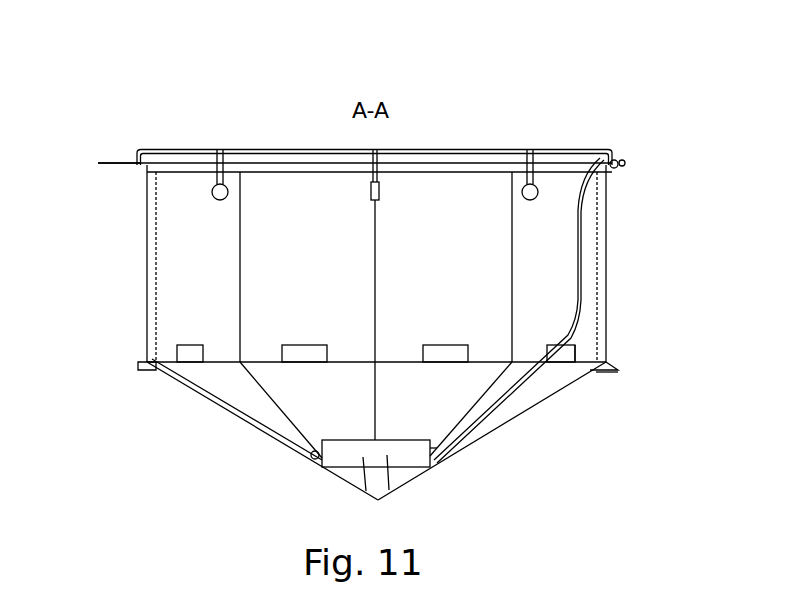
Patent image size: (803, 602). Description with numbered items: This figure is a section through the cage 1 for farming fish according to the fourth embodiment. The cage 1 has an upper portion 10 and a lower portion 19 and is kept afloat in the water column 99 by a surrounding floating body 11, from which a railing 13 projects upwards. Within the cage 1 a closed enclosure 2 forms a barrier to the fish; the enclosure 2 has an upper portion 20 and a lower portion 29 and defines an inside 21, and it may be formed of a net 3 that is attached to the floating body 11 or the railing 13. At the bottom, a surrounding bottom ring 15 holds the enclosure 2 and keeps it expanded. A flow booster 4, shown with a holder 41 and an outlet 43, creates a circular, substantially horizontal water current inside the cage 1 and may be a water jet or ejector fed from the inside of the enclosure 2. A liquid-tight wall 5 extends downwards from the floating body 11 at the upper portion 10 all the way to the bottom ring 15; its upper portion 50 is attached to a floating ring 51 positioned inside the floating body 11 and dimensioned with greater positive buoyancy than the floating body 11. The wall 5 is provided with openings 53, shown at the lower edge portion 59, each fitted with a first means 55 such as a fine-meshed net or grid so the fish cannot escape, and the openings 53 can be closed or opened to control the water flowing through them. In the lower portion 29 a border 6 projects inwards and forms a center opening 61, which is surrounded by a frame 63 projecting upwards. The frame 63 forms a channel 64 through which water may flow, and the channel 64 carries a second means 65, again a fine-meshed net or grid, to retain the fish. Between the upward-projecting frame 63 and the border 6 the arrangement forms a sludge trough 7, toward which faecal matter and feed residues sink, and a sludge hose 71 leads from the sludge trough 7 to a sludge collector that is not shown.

The cage 1 is at (236, 106).
The enclosure 2 is at (222, 296).
The net 3 is at (583, 320).
The flow booster 4 is at (592, 150).
The liquid-tight wall 5 is at (583, 198).
The border 6 is at (196, 375).
The sludge trough 7 is at (440, 455).
The upper portion of the cage 10 is at (196, 202).
The floating body 11 is at (137, 164).
The railing 13 is at (605, 157).
The bottom ring 15 is at (146, 368).
The lower portion of the cage 19 is at (246, 418).
The upper portion of the enclosure 20 is at (206, 210).
The inside of the enclosure 21 is at (156, 302).
The lower portion of the enclosure 29 is at (252, 437).
The holder 41 is at (552, 150).
The outlet 43 is at (537, 150).
The upper portion of the liquid-tight wall 50 is at (590, 182).
The floating ring 51 is at (625, 165).
The opening 53 is at (586, 364).
The first means for retaining the fish 55 is at (580, 372).
The lower edge portion 59 is at (580, 350).
The center opening 61 is at (372, 494).
The frame 63 is at (432, 462).
The channel 64 is at (389, 490).
The second means for retaining the fish 65 is at (440, 452).
The sludge hose 71 is at (572, 246).
The water column 99 is at (277, 491).